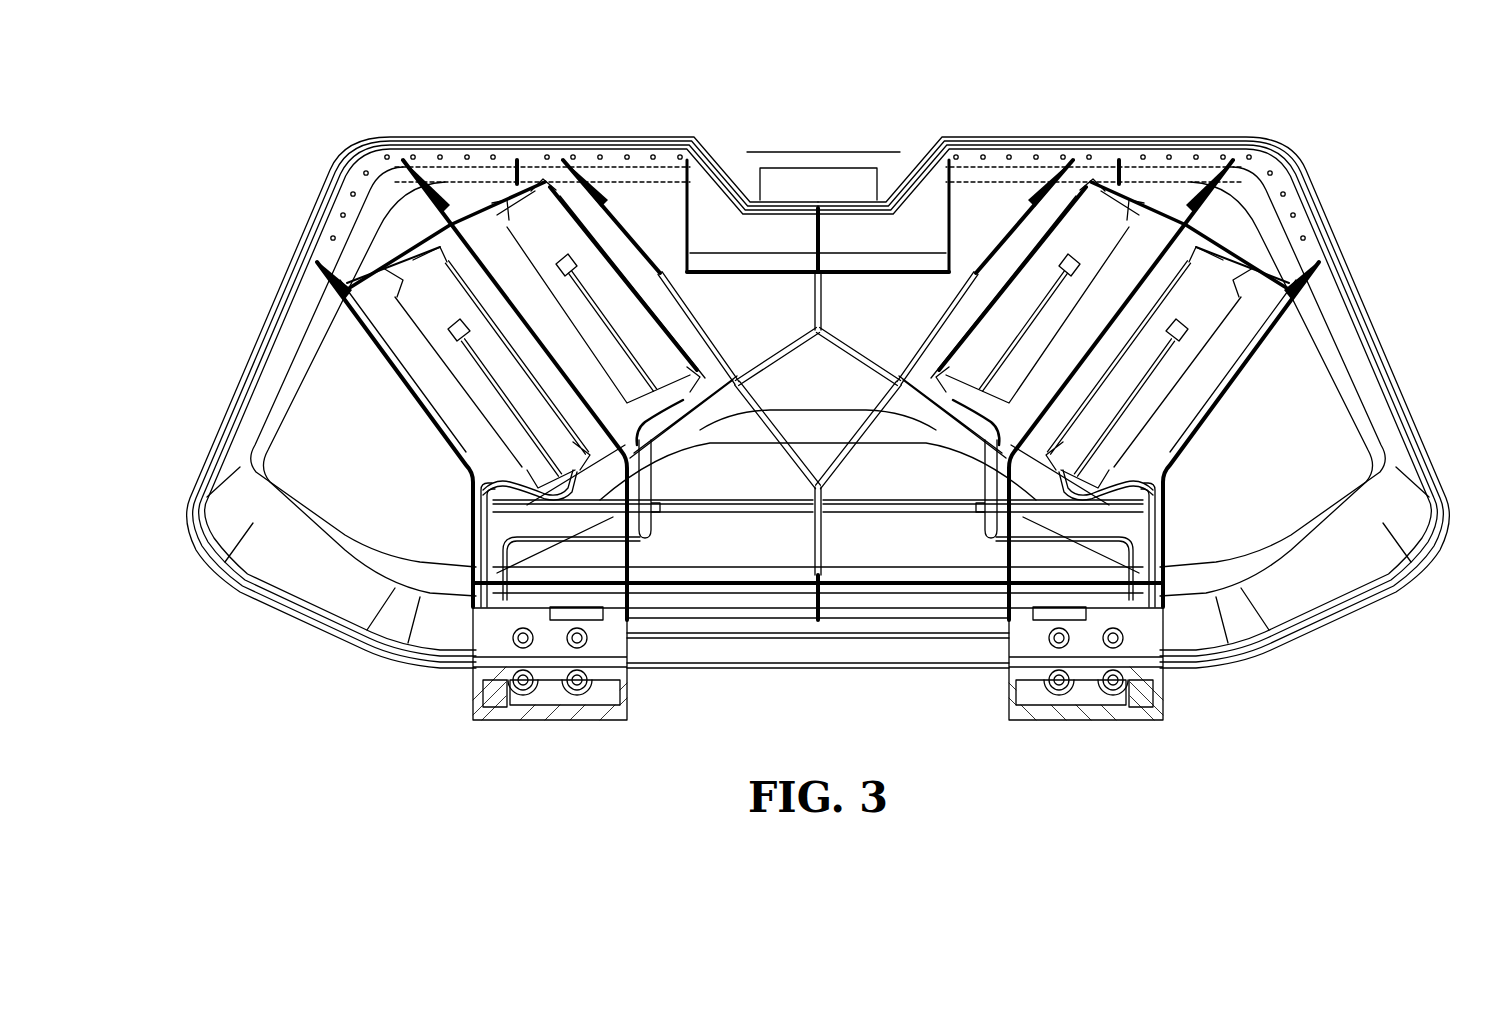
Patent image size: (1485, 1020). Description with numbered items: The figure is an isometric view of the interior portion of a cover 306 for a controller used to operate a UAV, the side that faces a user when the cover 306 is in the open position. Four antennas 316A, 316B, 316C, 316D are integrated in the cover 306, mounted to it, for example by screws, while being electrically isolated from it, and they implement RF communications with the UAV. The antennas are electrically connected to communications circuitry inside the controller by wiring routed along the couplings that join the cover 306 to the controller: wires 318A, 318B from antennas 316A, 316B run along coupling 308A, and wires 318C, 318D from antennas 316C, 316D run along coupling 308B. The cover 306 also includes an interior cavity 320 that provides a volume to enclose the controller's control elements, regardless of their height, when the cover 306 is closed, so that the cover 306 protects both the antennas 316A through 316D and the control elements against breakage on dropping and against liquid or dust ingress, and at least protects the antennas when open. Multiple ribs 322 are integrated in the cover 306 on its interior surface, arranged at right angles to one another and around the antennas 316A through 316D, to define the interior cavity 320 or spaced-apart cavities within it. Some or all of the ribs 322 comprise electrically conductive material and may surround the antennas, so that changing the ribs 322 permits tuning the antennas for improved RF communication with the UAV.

The cover 306 is at (272, 188).
The coupling 308A is at (545, 738).
The coupling 308B is at (1093, 738).
The antenna 316A is at (365, 190).
The antenna 316B is at (533, 217).
The antenna 316C is at (1103, 217).
The antenna 316D is at (1281, 163).
The wire 318A is at (470, 607).
The wire 318B is at (470, 588).
The wire 318C is at (1166, 607).
The wire 318D is at (1166, 588).
The interior cavity 320 is at (367, 475).
The ribs 322 is at (486, 210).